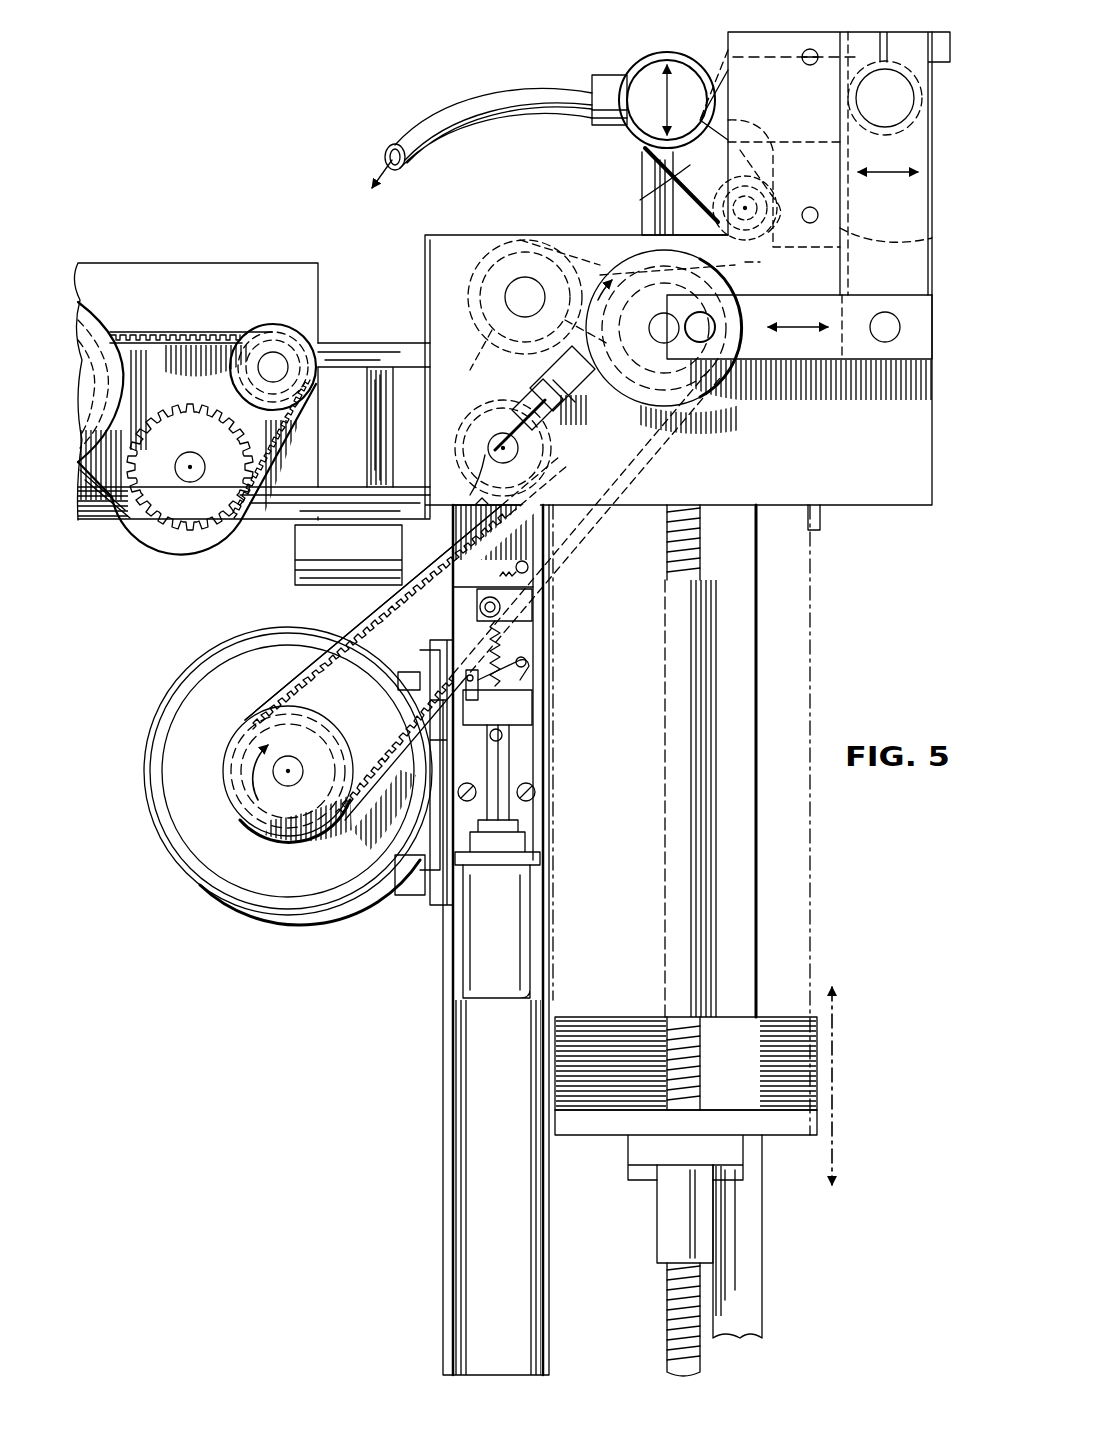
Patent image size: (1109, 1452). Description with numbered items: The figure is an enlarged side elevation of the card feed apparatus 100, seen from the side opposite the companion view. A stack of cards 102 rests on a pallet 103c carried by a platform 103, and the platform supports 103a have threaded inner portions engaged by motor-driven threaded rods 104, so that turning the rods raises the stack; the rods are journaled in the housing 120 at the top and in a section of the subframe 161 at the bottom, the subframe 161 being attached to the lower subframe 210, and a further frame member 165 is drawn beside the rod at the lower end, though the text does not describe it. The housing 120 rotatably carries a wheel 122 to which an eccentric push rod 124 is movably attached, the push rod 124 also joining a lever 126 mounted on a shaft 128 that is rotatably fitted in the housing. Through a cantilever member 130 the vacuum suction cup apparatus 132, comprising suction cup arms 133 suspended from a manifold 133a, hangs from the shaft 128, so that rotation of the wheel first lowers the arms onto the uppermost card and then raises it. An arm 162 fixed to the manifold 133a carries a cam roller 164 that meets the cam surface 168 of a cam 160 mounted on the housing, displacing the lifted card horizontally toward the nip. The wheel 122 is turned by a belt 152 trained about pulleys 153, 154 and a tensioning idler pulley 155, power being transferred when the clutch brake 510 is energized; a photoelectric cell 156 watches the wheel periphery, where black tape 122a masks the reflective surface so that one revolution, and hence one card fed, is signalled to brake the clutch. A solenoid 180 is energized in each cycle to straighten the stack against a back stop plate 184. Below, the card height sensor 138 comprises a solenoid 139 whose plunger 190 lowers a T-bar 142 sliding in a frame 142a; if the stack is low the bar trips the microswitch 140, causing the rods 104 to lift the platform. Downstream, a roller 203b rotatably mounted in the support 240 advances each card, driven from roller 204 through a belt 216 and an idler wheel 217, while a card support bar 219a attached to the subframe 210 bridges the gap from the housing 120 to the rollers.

The feed apparatus 100 is at (795, 28).
The stack of cards 102 is at (800, 650).
The platform 103 is at (607, 1140).
The platform supports 103a is at (665, 1226).
The pallet 103c is at (810, 1098).
The threaded rods 104 is at (703, 1352).
The housing 120 is at (915, 408).
The wheel 122 is at (675, 405).
The black tape 122a is at (732, 385).
The push rod 124 is at (805, 365).
The lever 126 is at (912, 195).
The shaft 128 is at (900, 92).
The cantilever member 130 is at (712, 52).
The vacuum suction cup apparatus 132 is at (660, 42).
The suction cup arms 133 is at (650, 175).
The manifold 133a is at (648, 78).
The sensor 138 is at (545, 660).
The solenoid 139 is at (485, 945).
The microswitch 140 is at (532, 696).
The T-bar 142 is at (522, 607).
The frame 142a is at (510, 545).
The belt 152 is at (378, 628).
The pulley 153 is at (752, 270).
The pulley 154 is at (535, 238).
The tensioning idler pulley 155 is at (478, 410).
The photoelectric cell 156 is at (575, 415).
The cam 160 is at (920, 236).
The subframe 161 is at (462, 1213).
The arm 162 is at (660, 194).
The cam roller 164 is at (722, 200).
The post 165 is at (750, 1244).
The cam surface 168 is at (793, 142).
The solenoid 180 is at (310, 550).
The back stop plate 184 is at (506, 100).
The plunger 190 is at (512, 748).
The roller 203b is at (270, 340).
The roller 204 is at (125, 378).
The subframe 210 is at (110, 510).
The belt 216 is at (198, 330).
The idler wheel 217 is at (190, 530).
The card support bar 219a is at (383, 342).
The support 240 is at (195, 268).
The clutch brake 510 is at (252, 890).